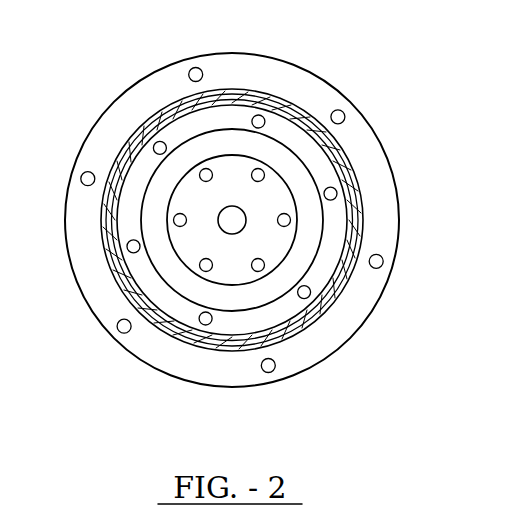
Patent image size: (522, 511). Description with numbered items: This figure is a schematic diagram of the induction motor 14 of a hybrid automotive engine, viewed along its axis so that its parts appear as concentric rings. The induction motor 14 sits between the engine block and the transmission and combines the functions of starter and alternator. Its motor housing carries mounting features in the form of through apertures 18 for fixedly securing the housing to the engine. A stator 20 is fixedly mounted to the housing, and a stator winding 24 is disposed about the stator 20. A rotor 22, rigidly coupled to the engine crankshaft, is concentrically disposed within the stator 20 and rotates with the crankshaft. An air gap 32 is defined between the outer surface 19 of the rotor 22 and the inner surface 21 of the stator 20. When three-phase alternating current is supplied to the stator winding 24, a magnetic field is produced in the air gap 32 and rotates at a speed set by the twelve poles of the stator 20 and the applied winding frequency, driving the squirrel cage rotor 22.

The induction motor 14 is at (272, 92).
The through apertures 18 is at (189, 68).
The outer surface 19 is at (178, 185).
The stator 20 is at (332, 258).
The inner surface 21 is at (218, 305).
The rotor 22 is at (200, 247).
The stator winding 24 is at (363, 231).
The air gap 32 is at (264, 320).